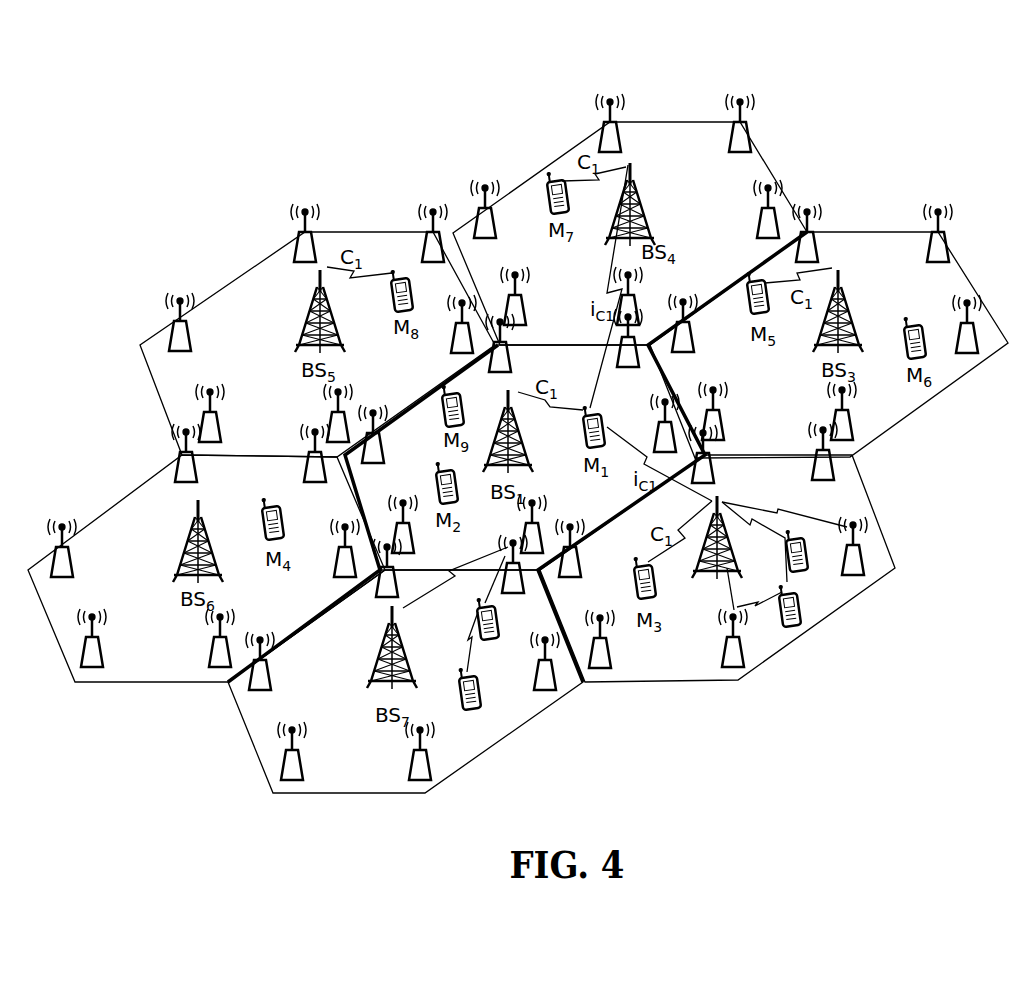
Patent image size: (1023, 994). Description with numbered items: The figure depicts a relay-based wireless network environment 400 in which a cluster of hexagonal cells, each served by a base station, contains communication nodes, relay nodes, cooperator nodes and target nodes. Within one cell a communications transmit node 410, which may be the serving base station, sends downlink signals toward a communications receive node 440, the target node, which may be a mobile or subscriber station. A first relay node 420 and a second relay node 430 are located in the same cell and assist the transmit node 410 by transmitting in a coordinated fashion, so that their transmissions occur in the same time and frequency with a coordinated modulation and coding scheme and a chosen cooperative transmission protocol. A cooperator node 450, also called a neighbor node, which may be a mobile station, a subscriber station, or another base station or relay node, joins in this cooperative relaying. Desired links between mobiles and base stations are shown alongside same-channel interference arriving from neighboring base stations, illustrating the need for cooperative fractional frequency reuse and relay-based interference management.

The relay-based wireless network environment 400 is at (520, 72).
The communications transmit node 410 is at (703, 605).
The first relay node 420 is at (737, 668).
The second relay node 430 is at (855, 585).
The communications receive node 440 is at (790, 627).
The cooperator node 450 is at (800, 573).